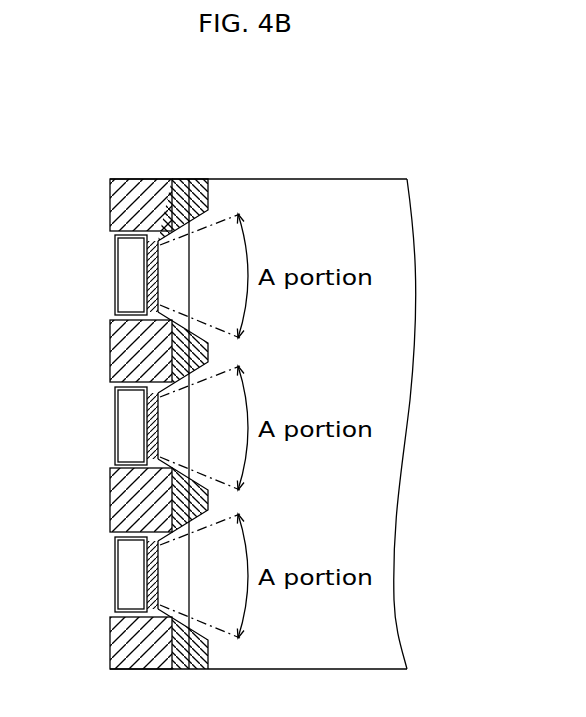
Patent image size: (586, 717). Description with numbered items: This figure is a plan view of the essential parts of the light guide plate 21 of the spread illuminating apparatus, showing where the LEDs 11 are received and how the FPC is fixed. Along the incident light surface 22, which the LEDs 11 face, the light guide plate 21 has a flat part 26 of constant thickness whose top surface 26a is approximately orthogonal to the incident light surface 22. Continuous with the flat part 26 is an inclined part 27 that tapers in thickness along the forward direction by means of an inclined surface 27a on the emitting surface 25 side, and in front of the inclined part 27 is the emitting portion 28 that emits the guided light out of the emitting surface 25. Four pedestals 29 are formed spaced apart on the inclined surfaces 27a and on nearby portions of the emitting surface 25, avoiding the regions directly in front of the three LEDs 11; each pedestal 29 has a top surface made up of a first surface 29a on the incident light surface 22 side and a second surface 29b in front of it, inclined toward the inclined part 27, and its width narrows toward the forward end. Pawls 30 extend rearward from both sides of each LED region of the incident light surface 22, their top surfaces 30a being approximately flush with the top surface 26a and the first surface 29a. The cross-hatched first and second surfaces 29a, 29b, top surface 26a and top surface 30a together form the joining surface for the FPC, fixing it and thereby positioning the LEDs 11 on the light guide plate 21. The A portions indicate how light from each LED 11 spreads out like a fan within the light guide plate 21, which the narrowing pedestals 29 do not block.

The LED 11 is at (128, 277).
The light guide plate 21 is at (388, 179).
The incident light surface 22 is at (128, 538).
The emitting surface 25 is at (400, 355).
The flat part 26 is at (148, 450).
The top surface 26a is at (148, 462).
The inclined part 27 is at (150, 303).
The inclined surface 27a is at (155, 308).
The emitting portion 28 is at (388, 440).
The pedestal 29 is at (224, 184).
The first surface 29a is at (165, 180).
The second surface 29b is at (186, 183).
The pawl 30 is at (135, 628).
The top surface 30a is at (132, 636).